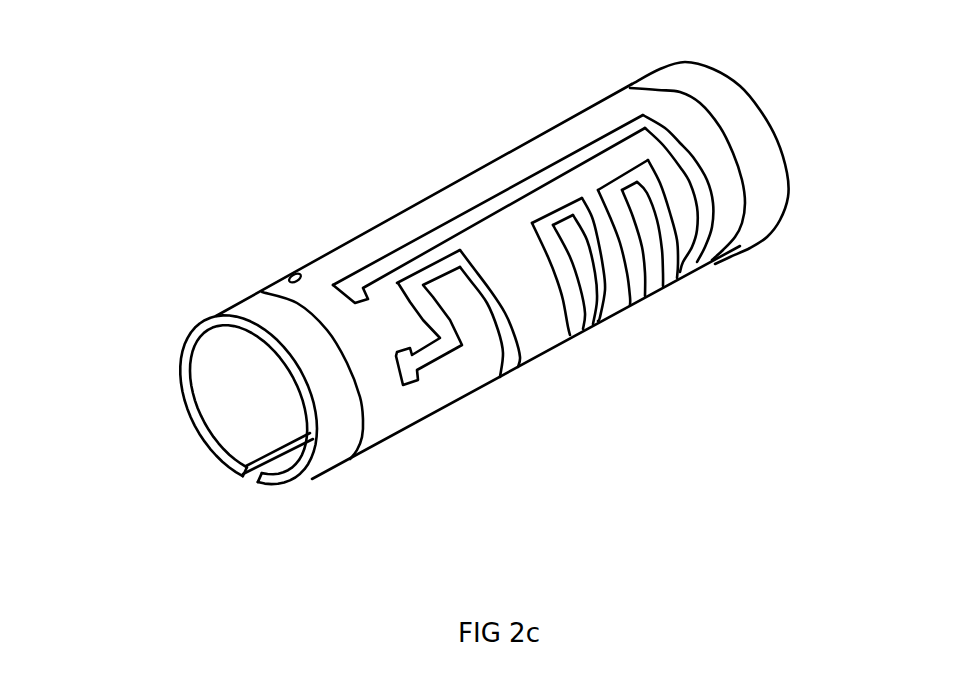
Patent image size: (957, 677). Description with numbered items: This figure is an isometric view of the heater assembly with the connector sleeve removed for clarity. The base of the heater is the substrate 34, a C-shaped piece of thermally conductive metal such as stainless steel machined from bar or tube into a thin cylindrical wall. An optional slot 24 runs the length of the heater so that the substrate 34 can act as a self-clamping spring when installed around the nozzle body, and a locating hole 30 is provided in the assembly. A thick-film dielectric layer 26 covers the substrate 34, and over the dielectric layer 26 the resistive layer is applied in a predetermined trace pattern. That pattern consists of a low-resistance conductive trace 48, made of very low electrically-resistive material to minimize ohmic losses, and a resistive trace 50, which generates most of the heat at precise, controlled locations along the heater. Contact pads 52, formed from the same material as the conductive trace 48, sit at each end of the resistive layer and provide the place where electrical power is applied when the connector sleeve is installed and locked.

The slot 24 is at (247, 482).
The thick-film dielectric layer 26 is at (737, 222).
The locating hole 30 is at (303, 278).
The substrate 34 is at (223, 402).
The conductive trace 48 is at (566, 155).
The resistive trace 50 is at (674, 130).
The contact pads 52 is at (412, 383).